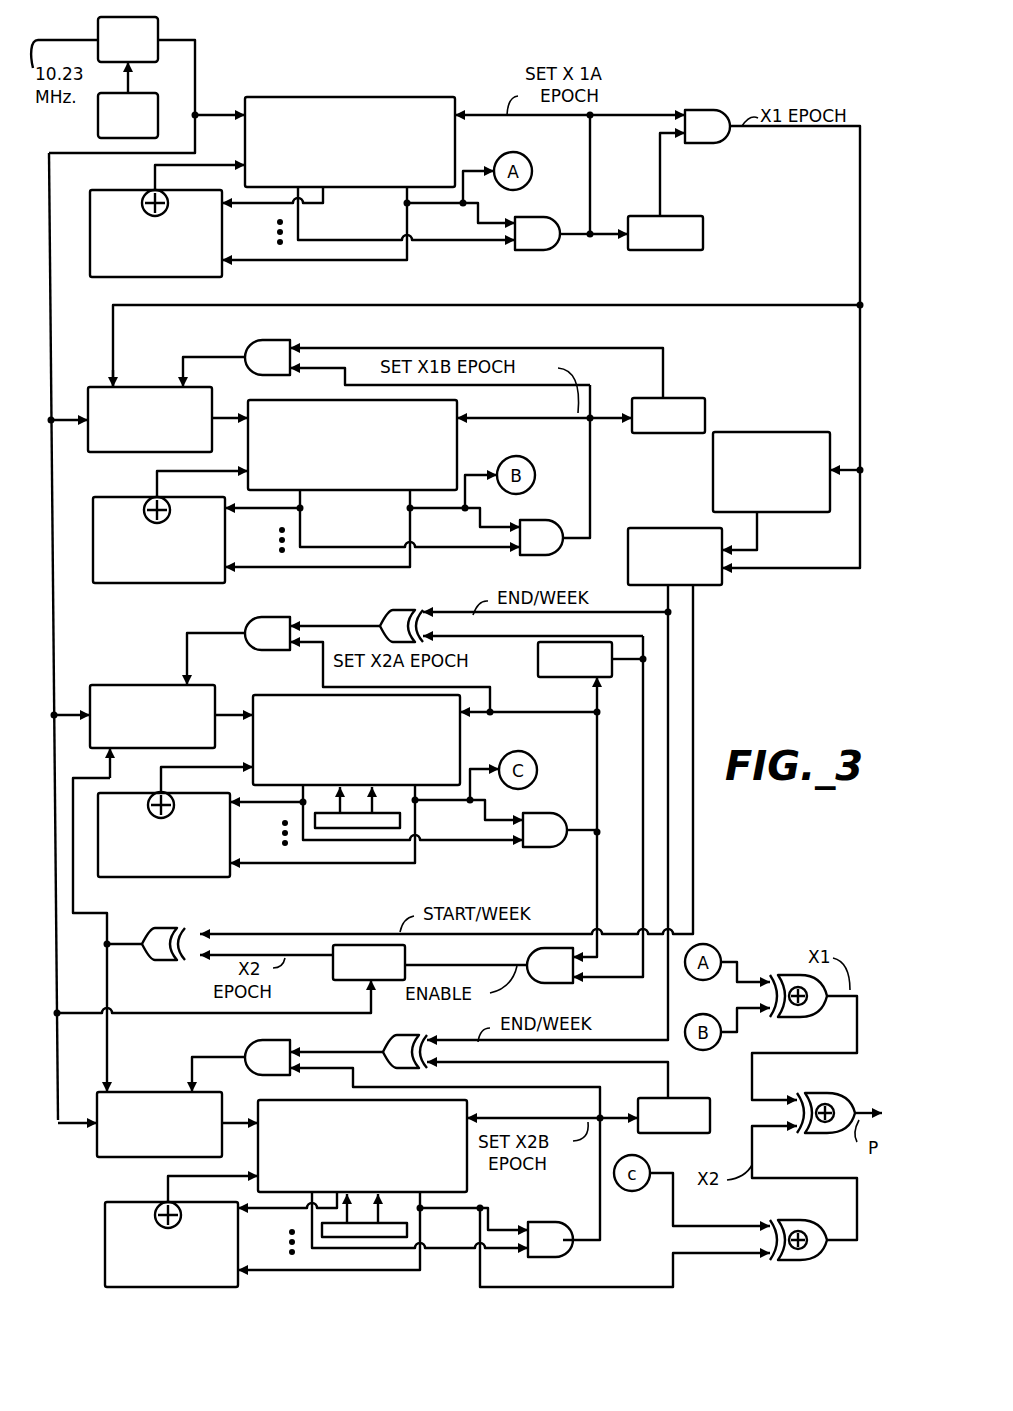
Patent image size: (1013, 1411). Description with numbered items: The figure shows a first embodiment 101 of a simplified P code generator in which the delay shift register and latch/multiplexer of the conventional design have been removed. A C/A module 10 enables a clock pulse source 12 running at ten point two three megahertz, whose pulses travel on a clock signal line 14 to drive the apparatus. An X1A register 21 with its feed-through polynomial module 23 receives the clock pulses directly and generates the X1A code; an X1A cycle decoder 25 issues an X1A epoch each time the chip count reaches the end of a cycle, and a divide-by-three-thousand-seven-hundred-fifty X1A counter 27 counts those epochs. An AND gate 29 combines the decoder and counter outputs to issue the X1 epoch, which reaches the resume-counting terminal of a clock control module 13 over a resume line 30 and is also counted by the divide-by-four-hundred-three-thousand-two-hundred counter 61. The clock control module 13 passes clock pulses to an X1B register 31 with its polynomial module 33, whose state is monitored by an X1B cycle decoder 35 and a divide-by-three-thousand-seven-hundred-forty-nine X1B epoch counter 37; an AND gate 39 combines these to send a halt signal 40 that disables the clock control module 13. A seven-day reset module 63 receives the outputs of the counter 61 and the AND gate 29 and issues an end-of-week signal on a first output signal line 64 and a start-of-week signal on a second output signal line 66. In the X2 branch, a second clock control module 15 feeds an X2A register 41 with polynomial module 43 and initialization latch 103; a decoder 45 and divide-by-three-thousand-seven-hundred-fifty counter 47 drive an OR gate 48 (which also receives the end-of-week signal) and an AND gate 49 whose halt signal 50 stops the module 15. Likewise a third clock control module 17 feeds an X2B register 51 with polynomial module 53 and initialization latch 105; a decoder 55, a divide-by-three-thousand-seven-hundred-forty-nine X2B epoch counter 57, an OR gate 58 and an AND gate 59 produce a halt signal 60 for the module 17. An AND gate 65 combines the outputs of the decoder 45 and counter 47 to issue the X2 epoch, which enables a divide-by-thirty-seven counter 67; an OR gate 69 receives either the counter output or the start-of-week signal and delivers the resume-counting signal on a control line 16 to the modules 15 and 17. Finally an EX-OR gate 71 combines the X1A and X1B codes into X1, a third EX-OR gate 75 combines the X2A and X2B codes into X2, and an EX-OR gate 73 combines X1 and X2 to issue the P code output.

The C/A module 10 is at (98, 118).
The clock pulse source 12 is at (160, 28).
The clock control module 13 is at (137, 452).
The clock signal line 14 is at (52, 330).
The second clock control module 15 is at (115, 685).
The control line 16 is at (75, 897).
The third clock control module 17 is at (148, 1158).
The X1A register 21 is at (387, 188).
The feed-through polynomial module 23 is at (225, 236).
The X1A cycle decoder 25 is at (532, 217).
The divide-by-3750 X1A counter 27 is at (672, 216).
The AND gate 29 is at (698, 110).
The resume line 30 is at (470, 305).
The X1B register 31 is at (388, 492).
The feed-through polynomial module 33 is at (228, 544).
The X1B cycle decoder 35 is at (533, 520).
The divide-by-3749 X1B epoch counter 37 is at (680, 398).
The AND gate 39 is at (288, 340).
The halt line 40 is at (252, 342).
The X2A register 41 is at (305, 693).
The feed-through polynomial module 43 is at (232, 838).
The 4092-chip decoder 45 is at (540, 813).
The divide-by-3750 counter 47 is at (568, 678).
The OR gate 48 is at (405, 612).
The AND gate 49 is at (275, 617).
The halt line 50 is at (247, 628).
The X2B register 51 is at (300, 1100).
The feed-through polynomial module 53 is at (241, 1246).
The 4093-state decoder 55 is at (543, 1222).
The divide-by-3749 X2B epoch counter 57 is at (682, 1098).
The OR gate 58 is at (410, 1036).
The AND gate 59 is at (283, 1040).
The halt line 60 is at (250, 1055).
The divide-by-403,200 counter 61 is at (748, 432).
The seven-day reset module 63 is at (642, 528).
The first output signal line 64 is at (672, 648).
The AND gate 65 is at (557, 985).
The second output signal line 66 is at (695, 685).
The divide-by-37 counter 67 is at (405, 950).
The OR gate 69 is at (172, 963).
The EX-OR gate 71 is at (748, 983).
The EX-OR gate 73 is at (830, 1095).
The third EX-OR gate 75 is at (795, 1262).
The first embodiment 101 is at (763, 54).
The initialization latch 103 is at (372, 830).
The initialization latch 105 is at (380, 1238).